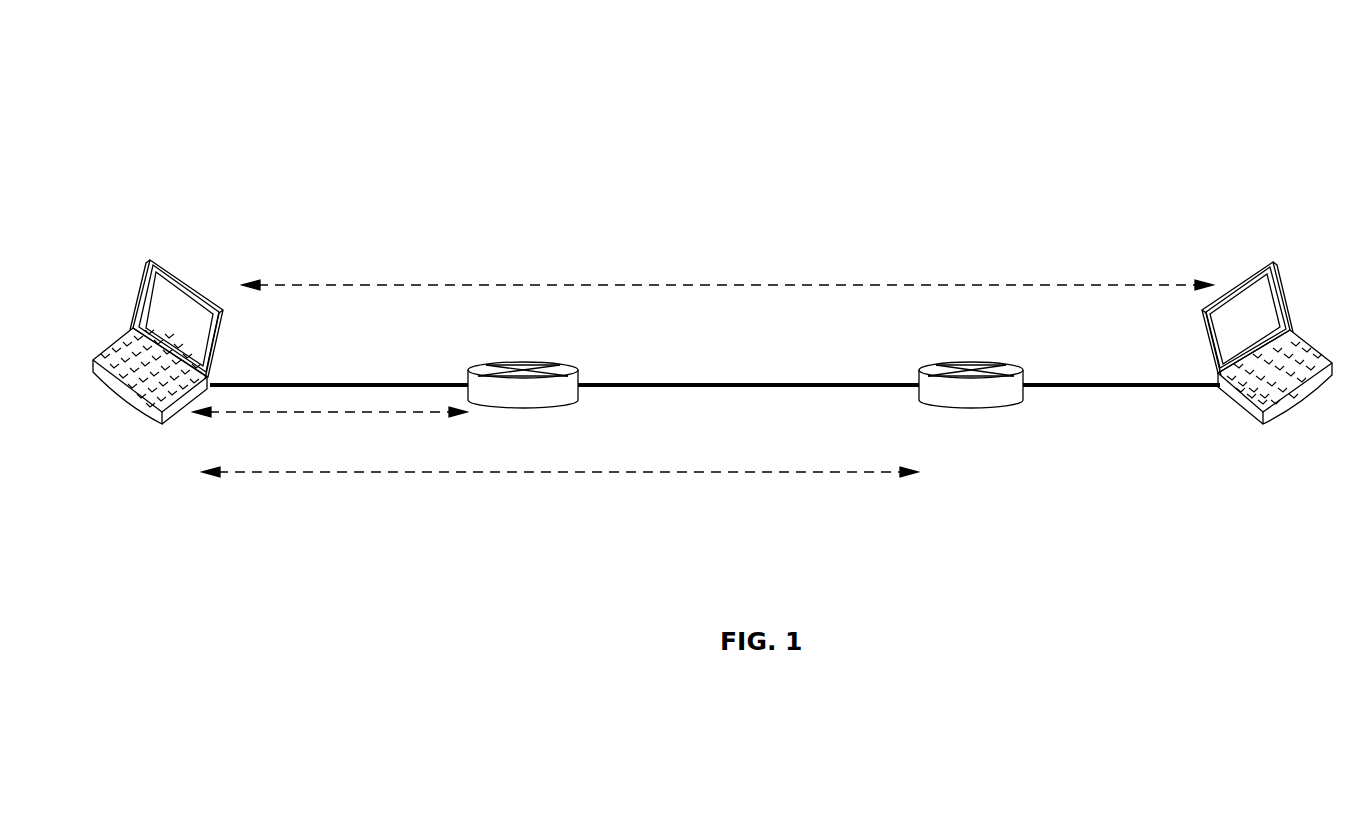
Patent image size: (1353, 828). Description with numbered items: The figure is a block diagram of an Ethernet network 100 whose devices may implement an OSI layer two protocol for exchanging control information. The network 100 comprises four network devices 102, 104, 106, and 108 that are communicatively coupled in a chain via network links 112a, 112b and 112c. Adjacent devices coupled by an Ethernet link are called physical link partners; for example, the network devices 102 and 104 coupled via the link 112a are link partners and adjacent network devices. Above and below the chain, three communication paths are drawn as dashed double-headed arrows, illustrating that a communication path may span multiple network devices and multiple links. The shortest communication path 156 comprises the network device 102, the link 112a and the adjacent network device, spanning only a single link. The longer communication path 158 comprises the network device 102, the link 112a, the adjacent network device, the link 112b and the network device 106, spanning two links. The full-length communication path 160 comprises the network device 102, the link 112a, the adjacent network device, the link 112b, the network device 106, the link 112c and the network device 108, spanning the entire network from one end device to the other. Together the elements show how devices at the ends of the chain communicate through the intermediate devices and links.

The network 100 is at (226, 108).
The network device 102 is at (194, 288).
The network device 104 is at (507, 363).
The network device 106 is at (937, 363).
The network device 108 is at (1278, 280).
The network link 112a is at (315, 383).
The network link 112b is at (703, 383).
The network link 112c is at (1088, 383).
The communication path 156 is at (322, 413).
The communication path 158 is at (778, 473).
The communication path 160 is at (805, 284).